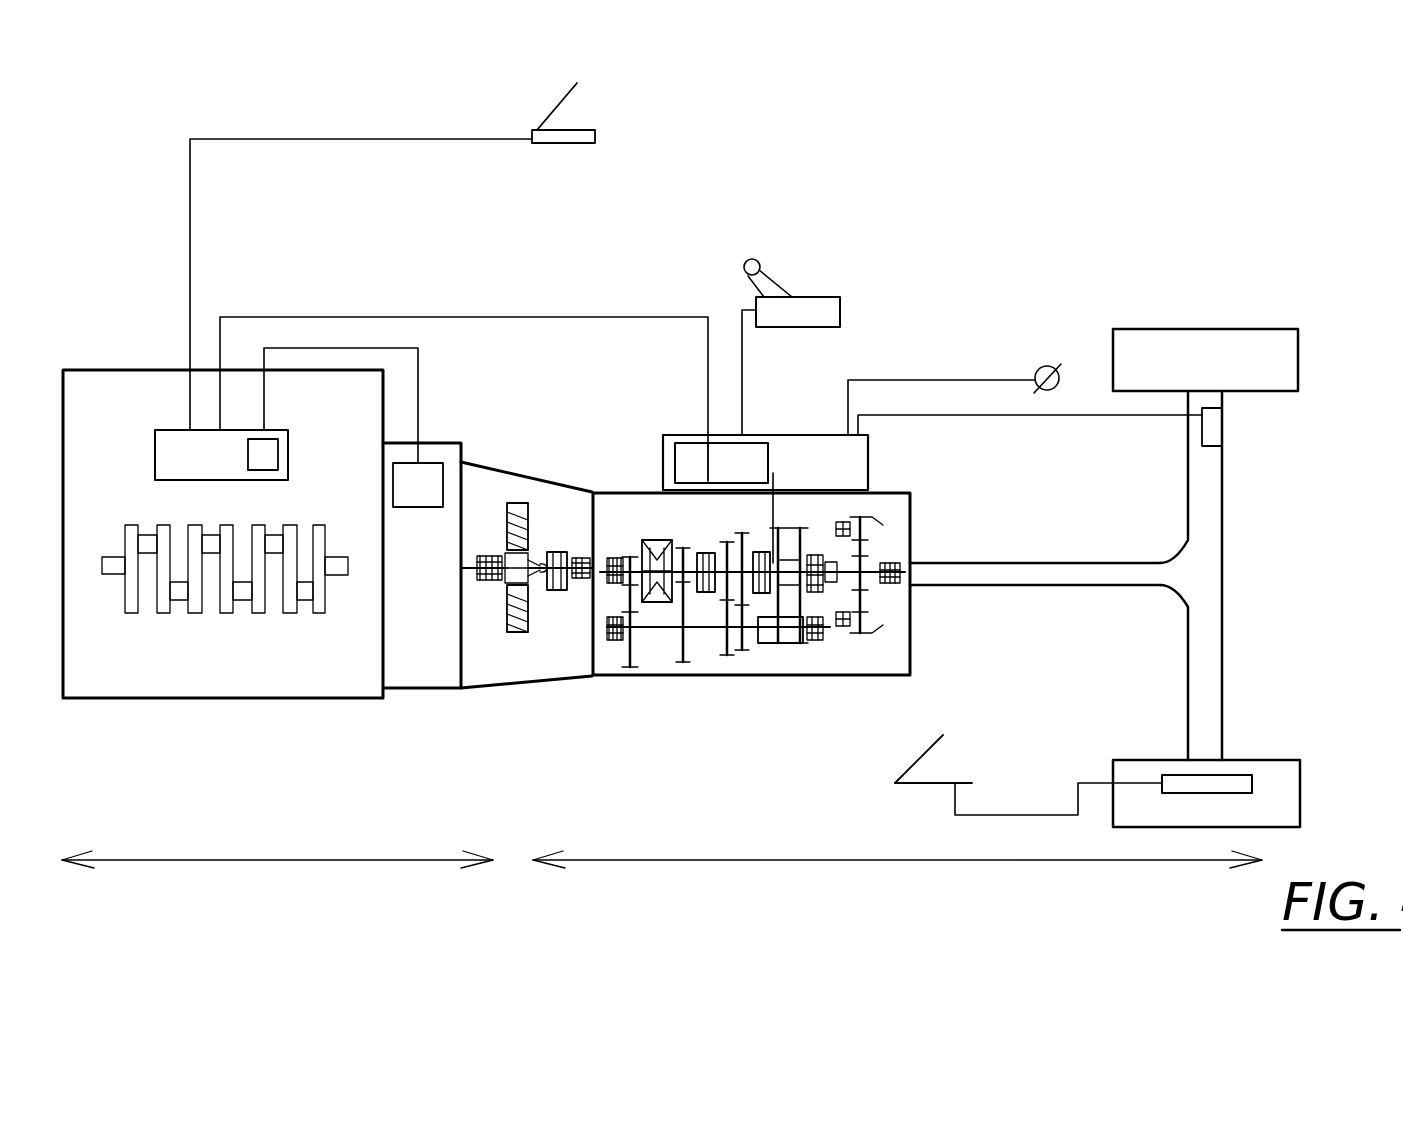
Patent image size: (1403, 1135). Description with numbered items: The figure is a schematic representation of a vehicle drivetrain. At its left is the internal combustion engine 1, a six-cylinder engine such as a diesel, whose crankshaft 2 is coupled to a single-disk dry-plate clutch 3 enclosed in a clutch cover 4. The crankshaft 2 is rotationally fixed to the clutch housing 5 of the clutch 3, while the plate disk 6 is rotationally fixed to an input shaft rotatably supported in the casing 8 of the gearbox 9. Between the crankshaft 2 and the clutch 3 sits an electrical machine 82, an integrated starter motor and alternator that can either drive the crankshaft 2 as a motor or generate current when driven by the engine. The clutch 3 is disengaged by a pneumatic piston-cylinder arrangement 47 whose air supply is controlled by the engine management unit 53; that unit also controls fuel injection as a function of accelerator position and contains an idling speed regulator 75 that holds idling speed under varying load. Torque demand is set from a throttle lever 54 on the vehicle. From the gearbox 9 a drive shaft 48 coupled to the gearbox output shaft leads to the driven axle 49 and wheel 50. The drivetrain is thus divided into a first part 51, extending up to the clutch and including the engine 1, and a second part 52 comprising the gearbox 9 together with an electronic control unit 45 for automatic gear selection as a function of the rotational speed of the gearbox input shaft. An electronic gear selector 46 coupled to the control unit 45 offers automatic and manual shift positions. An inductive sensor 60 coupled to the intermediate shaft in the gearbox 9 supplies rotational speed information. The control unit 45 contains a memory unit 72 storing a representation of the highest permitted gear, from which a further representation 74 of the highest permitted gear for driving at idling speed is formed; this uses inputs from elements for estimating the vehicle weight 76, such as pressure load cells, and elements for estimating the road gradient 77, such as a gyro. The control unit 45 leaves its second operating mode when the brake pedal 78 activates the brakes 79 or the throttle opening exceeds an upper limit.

The internal combustion engine 1 is at (73, 358).
The crankshaft 2 is at (165, 612).
The clutch 3 is at (543, 547).
The clutch cover 4 is at (487, 465).
The clutch housing 5 is at (505, 610).
The plate disk 6 is at (515, 637).
The casing 8 is at (621, 676).
The gearbox 9 is at (890, 476).
The control unit 45 is at (838, 433).
The gear selector 46 is at (814, 297).
The pneumatic piston-cylinder arrangement 47 is at (510, 492).
The drive shaft 48 is at (1070, 586).
The driven axle 49 is at (1208, 510).
The wheel 50 is at (1192, 347).
The first part 51 is at (277, 849).
The second part 52 is at (897, 849).
The engine management unit 53 is at (172, 452).
The throttle lever 54 is at (560, 118).
The inductive sensor 60 is at (768, 640).
The memory unit 72 is at (690, 452).
The representation 74 is at (728, 452).
The idling speed regulator 75 is at (266, 462).
The elements for estimating the vehicle weight 76 is at (1212, 430).
The elements for estimating the road gradient 77 is at (1042, 367).
The brake pedal 78 is at (938, 766).
The brakes 79 is at (1233, 785).
The electrical machine 82 is at (421, 478).